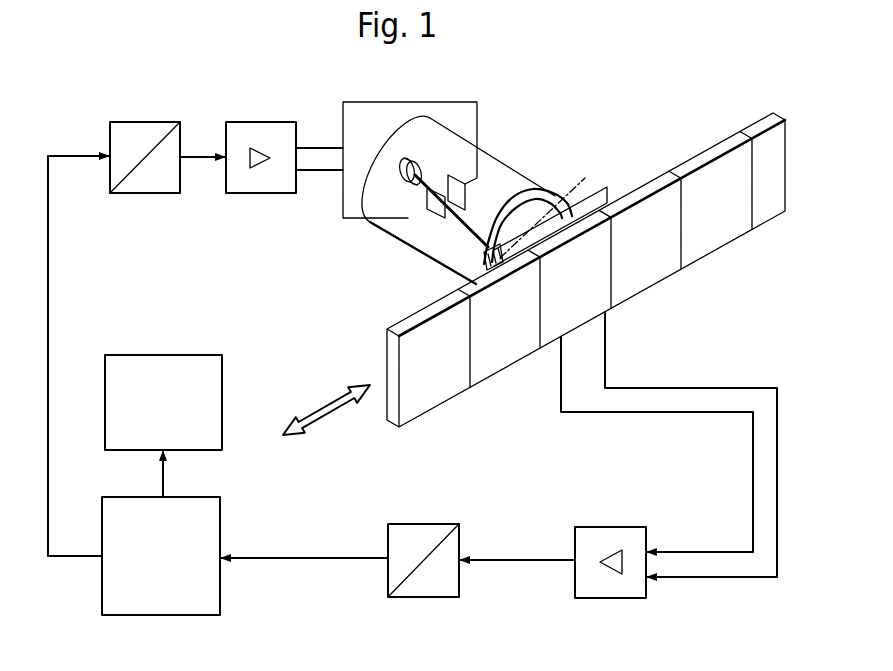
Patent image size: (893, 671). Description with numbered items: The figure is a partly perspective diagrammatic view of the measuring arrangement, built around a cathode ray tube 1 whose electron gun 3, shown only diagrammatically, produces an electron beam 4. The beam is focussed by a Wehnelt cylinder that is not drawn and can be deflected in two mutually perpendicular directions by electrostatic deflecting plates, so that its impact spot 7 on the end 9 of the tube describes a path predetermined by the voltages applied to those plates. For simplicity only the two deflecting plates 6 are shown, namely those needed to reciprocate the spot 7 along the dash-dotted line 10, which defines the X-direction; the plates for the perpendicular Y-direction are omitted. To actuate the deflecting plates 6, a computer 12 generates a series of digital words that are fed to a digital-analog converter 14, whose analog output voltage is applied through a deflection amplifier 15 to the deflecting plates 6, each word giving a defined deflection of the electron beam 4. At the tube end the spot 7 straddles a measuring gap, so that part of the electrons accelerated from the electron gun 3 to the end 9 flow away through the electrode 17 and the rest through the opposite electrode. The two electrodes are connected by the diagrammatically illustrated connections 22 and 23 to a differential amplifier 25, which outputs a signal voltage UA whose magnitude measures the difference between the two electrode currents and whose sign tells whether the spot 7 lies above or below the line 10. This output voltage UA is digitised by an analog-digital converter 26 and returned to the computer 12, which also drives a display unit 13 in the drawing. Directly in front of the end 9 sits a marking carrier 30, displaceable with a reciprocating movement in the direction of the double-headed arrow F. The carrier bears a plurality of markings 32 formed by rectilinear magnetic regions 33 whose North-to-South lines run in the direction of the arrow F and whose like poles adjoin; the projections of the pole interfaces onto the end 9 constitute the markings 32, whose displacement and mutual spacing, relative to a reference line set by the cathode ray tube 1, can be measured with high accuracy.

The cathode ray tube 1 is at (506, 148).
The electron gun 3 is at (407, 160).
The electron beam 4 is at (470, 225).
The deflecting plates 6 is at (457, 178).
The impact spot 7 is at (481, 274).
The end of the tube 9 is at (551, 214).
The dash-dotted line 10 is at (555, 206).
The computer 12 is at (210, 517).
The display unit 13 is at (178, 371).
The digital-analog converter 14 is at (154, 131).
The deflection amplifier 15 is at (269, 130).
The electrode 17 is at (527, 212).
The connection 22 is at (695, 388).
The connection 23 is at (650, 413).
The differential amplifier 25 is at (612, 587).
The analog-digital converter 26 is at (423, 584).
The marking carrier 30 is at (672, 147).
The markings 32 is at (467, 372).
The magnetic regions 33 is at (758, 140).
The double-headed arrow F is at (333, 410).
The signal voltage UA is at (510, 563).